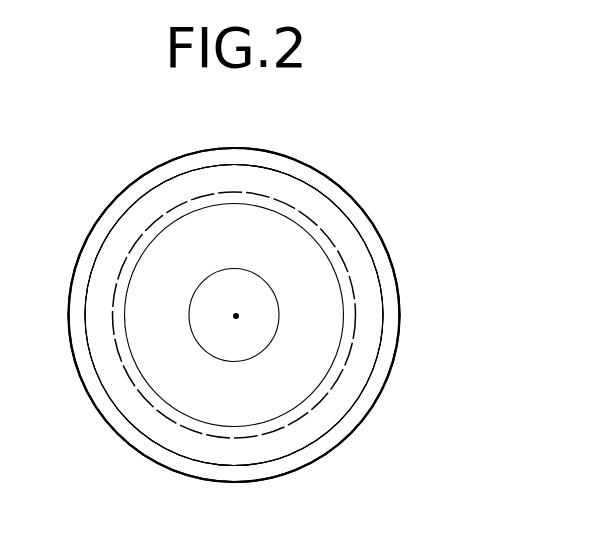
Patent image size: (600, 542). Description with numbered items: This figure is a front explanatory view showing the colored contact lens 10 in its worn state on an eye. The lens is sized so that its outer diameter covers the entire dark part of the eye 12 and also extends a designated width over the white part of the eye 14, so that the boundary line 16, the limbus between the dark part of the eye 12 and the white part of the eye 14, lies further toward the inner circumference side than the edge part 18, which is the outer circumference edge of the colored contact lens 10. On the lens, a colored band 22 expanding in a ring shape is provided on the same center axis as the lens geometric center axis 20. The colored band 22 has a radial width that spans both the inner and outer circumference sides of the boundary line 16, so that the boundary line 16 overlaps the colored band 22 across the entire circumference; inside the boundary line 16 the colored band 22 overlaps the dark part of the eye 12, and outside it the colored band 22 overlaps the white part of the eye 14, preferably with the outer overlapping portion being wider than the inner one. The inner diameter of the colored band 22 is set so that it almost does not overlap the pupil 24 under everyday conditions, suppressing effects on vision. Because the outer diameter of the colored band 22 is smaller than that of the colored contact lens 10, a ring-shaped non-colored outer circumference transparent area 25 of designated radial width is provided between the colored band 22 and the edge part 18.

The colored contact lens 10 is at (368, 196).
The dark part of the eye 12 is at (322, 282).
The white part of the eye 14 is at (352, 393).
The boundary line 16 is at (364, 326).
The edge part 18 is at (113, 207).
The lens geometric center axis 20 is at (234, 317).
The colored band 22 is at (170, 442).
The pupil 24 is at (208, 298).
The outer circumference transparent area 25 is at (310, 175).